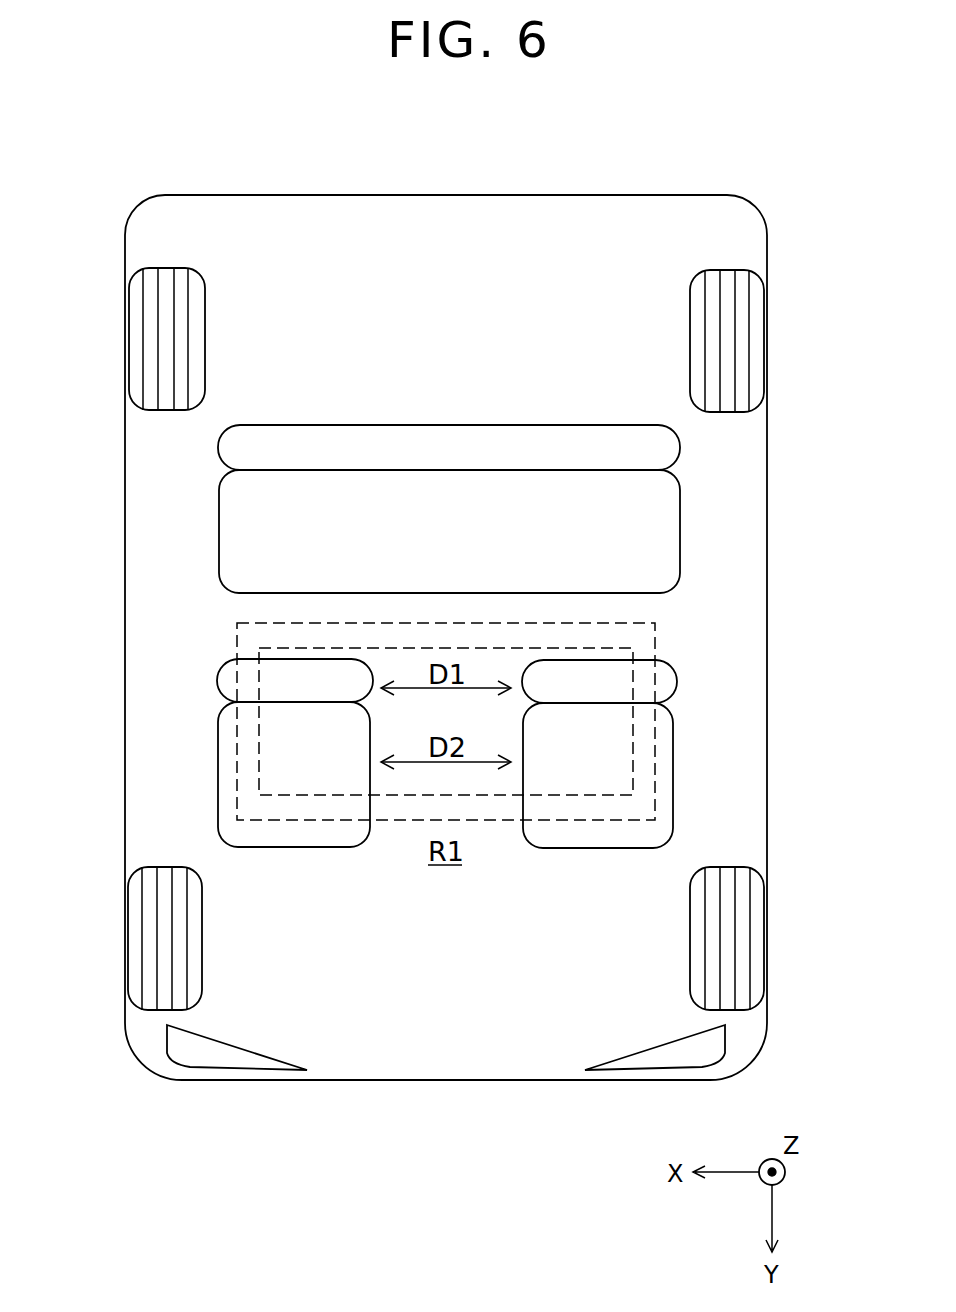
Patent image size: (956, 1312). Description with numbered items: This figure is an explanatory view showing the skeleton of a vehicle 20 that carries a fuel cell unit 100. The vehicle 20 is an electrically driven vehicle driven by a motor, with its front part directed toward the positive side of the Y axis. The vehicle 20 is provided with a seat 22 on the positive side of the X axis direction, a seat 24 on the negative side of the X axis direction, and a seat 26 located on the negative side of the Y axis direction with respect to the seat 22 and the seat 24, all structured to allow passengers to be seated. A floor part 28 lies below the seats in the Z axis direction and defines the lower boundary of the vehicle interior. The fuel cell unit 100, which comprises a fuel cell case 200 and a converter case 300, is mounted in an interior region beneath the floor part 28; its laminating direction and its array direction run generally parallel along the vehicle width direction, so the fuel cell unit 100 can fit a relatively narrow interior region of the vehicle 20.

The vehicle 20 is at (752, 172).
The seat 22 is at (218, 832).
The seat 24 is at (673, 828).
The seat 26 is at (218, 512).
The floor part 28 is at (461, 966).
The fuel cell unit 100 is at (670, 624).
The fuel cell case 200 is at (303, 647).
The converter case 300 is at (237, 640).